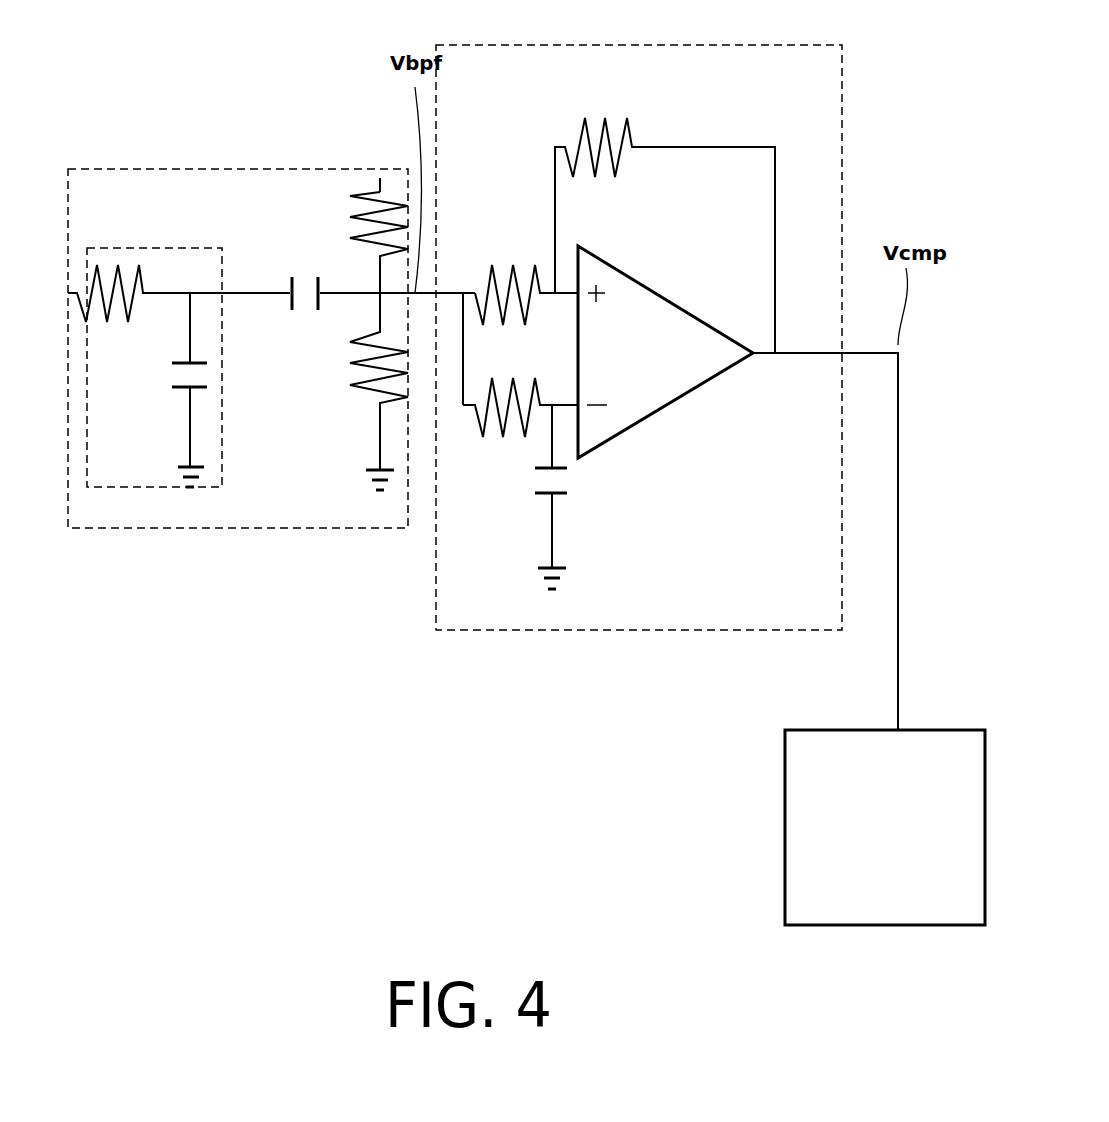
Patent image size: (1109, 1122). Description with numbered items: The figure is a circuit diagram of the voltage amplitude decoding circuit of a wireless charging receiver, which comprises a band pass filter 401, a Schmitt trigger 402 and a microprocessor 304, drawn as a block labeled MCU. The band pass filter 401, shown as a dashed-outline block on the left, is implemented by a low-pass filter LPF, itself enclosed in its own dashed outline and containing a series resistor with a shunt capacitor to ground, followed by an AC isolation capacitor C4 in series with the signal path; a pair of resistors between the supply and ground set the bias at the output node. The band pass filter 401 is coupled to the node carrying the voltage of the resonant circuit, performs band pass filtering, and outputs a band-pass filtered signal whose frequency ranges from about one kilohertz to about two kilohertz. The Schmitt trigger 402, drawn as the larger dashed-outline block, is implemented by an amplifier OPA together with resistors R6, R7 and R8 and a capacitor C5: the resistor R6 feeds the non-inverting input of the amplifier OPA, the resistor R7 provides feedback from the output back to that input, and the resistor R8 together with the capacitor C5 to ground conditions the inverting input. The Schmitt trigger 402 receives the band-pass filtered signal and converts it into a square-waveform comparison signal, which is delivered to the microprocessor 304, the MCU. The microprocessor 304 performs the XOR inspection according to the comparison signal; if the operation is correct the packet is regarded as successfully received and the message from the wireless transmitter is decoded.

The band pass filter 401 is at (271, 311).
The Schmitt trigger 402 is at (639, 388).
The microprocessor 304 is at (885, 864).
The low-pass filter LPF is at (155, 272).
The AC isolation capacitor C4 is at (306, 278).
The capacitor C5 is at (535, 497).
The resistor R6 is at (526, 278).
The resistor R7 is at (665, 221).
The resistor R8 is at (520, 396).
The amplifier OPA is at (665, 340).
The microprocessor MCU is at (843, 898).